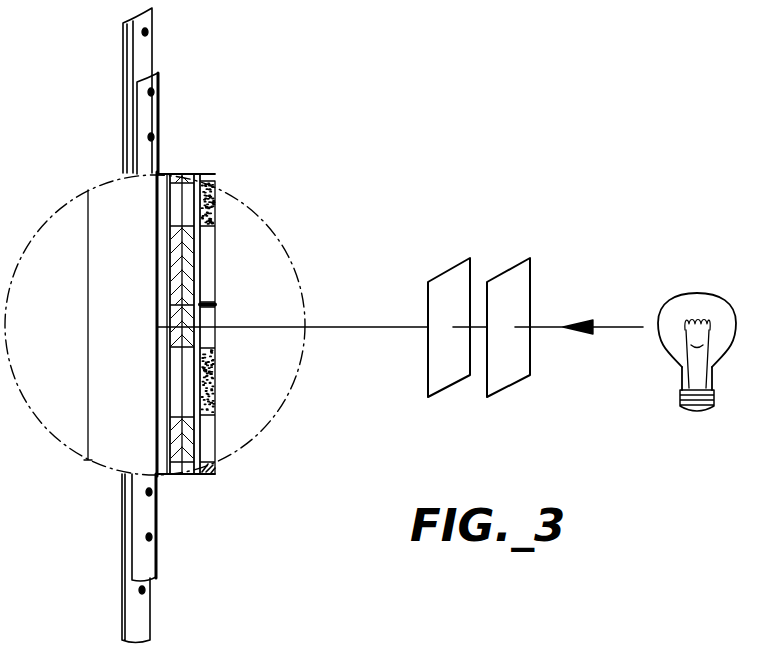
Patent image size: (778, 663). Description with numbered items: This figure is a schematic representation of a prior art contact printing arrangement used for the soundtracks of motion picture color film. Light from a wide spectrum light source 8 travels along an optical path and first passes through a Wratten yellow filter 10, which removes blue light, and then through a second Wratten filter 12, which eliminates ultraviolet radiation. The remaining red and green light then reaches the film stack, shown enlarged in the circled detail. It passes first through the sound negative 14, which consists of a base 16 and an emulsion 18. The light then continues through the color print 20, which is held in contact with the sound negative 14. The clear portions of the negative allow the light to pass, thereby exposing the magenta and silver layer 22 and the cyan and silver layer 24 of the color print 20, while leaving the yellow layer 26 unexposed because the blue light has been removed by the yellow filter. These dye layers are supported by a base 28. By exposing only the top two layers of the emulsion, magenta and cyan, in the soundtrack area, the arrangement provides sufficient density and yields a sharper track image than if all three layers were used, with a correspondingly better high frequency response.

The wide spectrum light source 8 is at (692, 294).
The Wratten 12 yellow filter 10 is at (508, 263).
The Wratten 2B filter 12 is at (450, 263).
The sound negative 14 is at (165, 110).
The base 16 is at (260, 432).
The emulsion 18 is at (210, 472).
The color print 20 is at (155, 50).
The magenta and silver layer 22 is at (187, 477).
The cyan and silver layer 24 is at (175, 477).
The yellow layer 26 is at (167, 477).
The base 28 is at (138, 452).